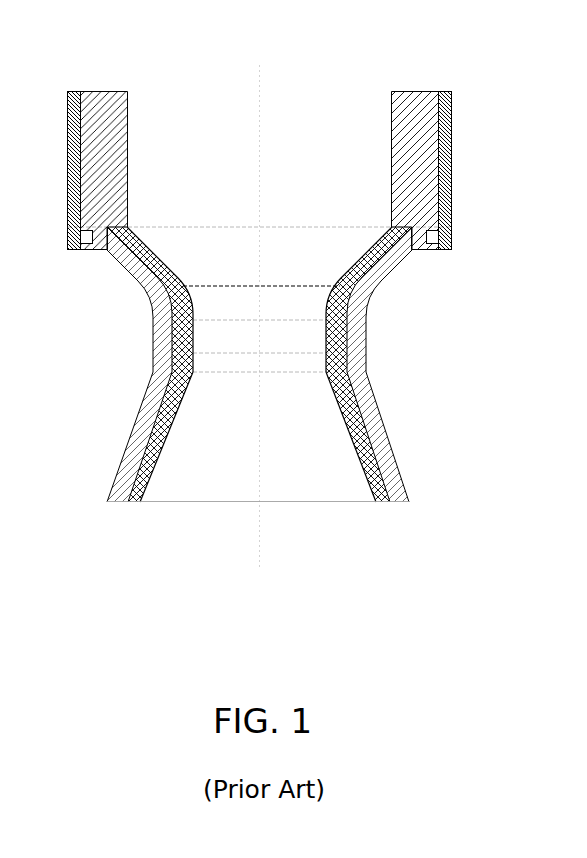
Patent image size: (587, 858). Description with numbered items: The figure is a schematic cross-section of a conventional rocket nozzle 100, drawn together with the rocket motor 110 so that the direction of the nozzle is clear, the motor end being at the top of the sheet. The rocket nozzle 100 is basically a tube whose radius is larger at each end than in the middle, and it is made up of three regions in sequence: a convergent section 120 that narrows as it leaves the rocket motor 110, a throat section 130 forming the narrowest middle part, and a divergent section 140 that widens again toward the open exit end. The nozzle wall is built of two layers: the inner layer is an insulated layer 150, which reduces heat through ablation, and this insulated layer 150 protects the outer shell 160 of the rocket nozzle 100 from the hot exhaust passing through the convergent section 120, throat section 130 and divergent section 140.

The rocket nozzle 100 is at (122, 362).
The rocket motor 110 is at (442, 90).
The convergent section 120 is at (364, 260).
The throat section 130 is at (327, 345).
The divergent section 140 is at (362, 453).
The insulated layer 150 is at (378, 502).
The shell 160 is at (372, 433).